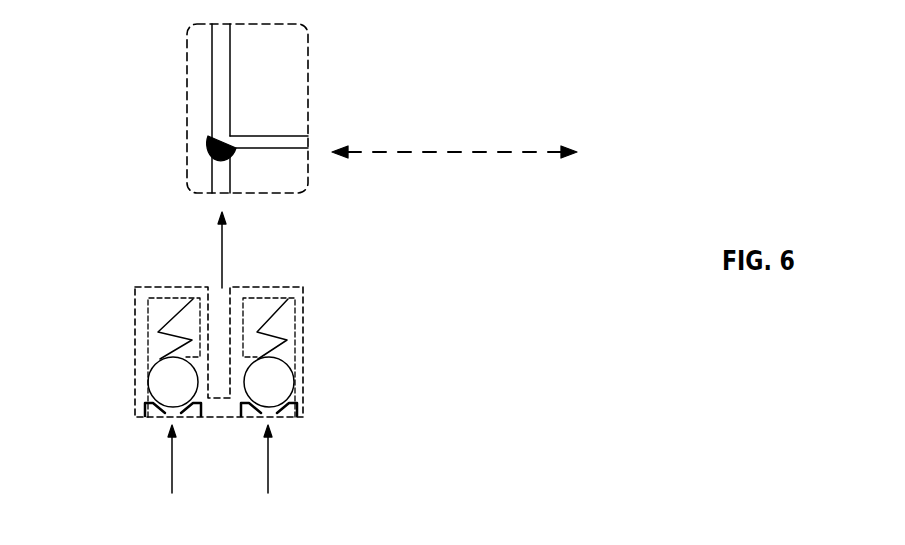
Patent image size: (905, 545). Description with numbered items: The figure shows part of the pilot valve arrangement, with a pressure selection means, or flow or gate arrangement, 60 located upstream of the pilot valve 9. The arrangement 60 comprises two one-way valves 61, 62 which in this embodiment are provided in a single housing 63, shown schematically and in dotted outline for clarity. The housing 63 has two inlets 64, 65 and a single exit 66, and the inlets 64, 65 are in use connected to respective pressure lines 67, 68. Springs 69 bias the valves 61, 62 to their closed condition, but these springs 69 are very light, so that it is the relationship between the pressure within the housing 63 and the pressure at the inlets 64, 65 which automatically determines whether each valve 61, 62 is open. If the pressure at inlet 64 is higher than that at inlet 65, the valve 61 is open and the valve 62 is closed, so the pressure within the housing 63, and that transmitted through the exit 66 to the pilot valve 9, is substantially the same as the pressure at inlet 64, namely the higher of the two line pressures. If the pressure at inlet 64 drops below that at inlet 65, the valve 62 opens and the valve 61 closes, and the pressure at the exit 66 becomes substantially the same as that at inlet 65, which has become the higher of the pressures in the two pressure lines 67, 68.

The pilot valve 9 is at (209, 137).
The pressure selection means 60 is at (200, 351).
The one-way valve 61 is at (155, 380).
The one-way valve 62 is at (283, 380).
The housing 63 is at (305, 302).
The inlet 64 is at (170, 410).
The inlet 65 is at (268, 410).
The exit 66 is at (222, 288).
The pressure line 67 is at (172, 470).
The pressure line 68 is at (270, 460).
The spring 69 is at (273, 297).